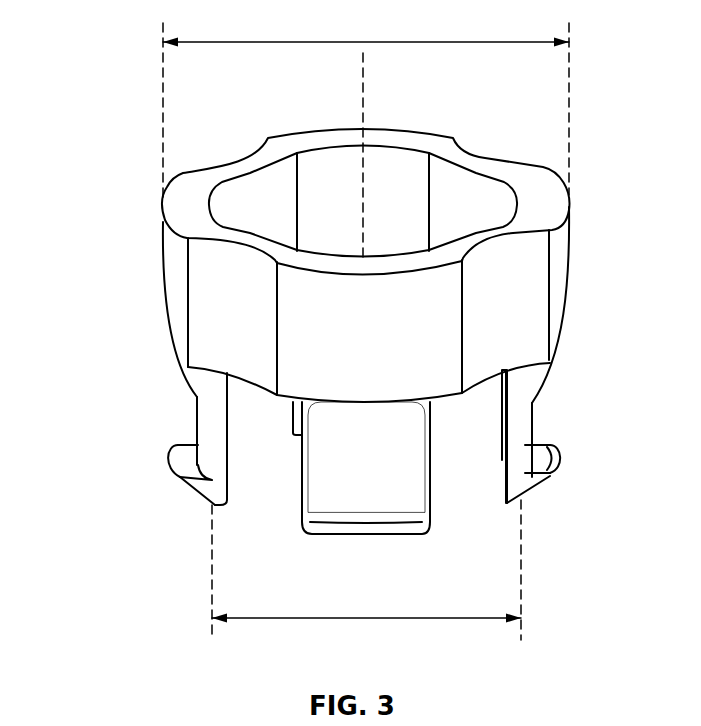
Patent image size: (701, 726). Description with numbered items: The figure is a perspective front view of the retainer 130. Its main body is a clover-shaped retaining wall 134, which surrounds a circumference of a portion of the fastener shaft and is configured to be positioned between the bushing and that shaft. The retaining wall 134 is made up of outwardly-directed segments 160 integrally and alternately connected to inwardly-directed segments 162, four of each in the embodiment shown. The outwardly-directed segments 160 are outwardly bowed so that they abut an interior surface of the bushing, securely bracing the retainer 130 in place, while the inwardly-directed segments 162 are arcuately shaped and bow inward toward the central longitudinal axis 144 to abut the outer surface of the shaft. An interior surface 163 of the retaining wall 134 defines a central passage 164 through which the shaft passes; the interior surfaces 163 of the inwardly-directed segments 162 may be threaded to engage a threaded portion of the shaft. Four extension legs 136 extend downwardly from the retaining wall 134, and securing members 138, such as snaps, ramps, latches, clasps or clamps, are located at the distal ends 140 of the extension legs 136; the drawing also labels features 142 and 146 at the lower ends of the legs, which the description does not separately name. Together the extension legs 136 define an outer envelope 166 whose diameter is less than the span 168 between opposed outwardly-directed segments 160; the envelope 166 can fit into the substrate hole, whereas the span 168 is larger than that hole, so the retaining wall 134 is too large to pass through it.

The retainer 130 is at (124, 58).
The retaining wall 134 is at (570, 217).
The extension legs 136 is at (197, 418).
The securing members 138 is at (168, 470).
The distal ends 140 is at (302, 510).
The leg bottom edge 142 is at (190, 493).
The central longitudinal axis 144 is at (360, 80).
The hook lobe 146 is at (180, 458).
The outwardly-directed segments 160 is at (183, 217).
The inwardly-directed segments 162 is at (245, 163).
The interior surface 163 is at (338, 181).
The central passage 164 is at (404, 180).
The outer envelope 166 is at (335, 622).
The span 168 is at (443, 43).